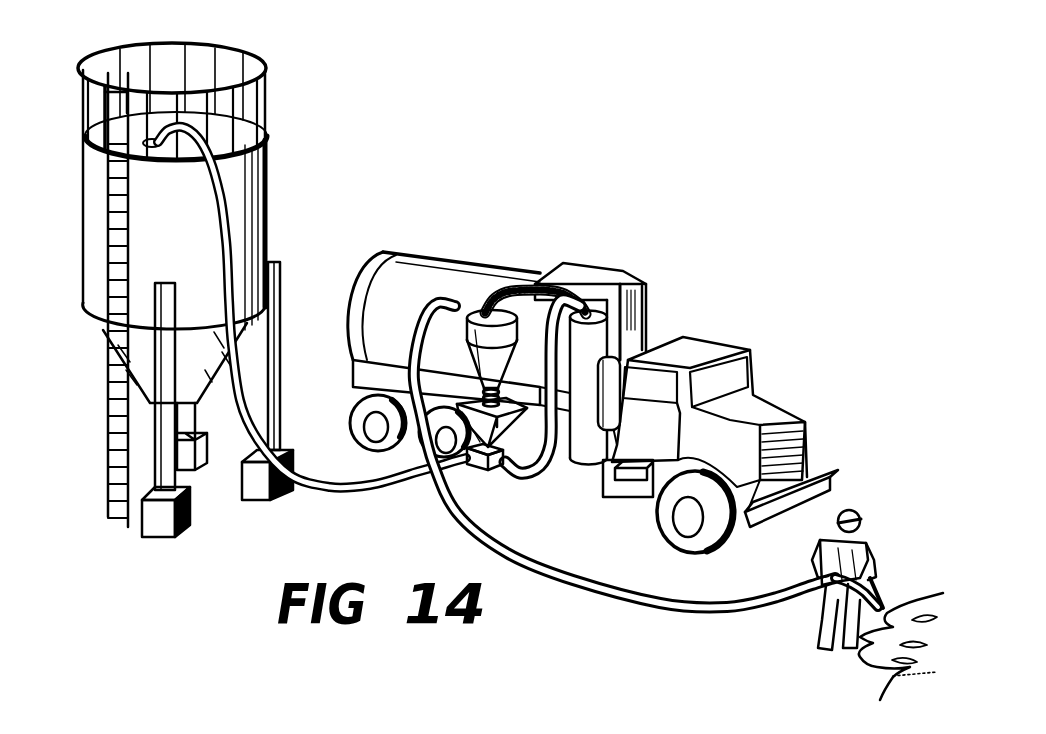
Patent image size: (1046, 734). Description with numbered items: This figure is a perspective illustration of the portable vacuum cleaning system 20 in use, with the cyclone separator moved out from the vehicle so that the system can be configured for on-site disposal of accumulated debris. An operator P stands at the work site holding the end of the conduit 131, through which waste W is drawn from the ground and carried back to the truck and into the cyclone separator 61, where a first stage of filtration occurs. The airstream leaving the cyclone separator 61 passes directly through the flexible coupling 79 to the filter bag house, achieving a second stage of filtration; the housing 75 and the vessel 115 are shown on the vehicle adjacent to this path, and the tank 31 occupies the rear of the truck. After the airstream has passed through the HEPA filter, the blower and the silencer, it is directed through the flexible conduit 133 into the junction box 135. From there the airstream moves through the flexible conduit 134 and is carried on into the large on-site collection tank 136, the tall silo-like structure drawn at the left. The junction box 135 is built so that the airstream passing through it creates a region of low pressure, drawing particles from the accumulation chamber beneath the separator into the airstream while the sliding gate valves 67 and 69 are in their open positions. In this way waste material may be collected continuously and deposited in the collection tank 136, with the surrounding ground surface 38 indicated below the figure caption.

The portable vacuum cleaning system 20 is at (477, 211).
The liquid tank 31 is at (415, 252).
The cyclone separator 61 is at (481, 352).
The sliding gate valve 67 is at (504, 382).
The sliding gate valve 69 is at (502, 450).
The blower housing 75 is at (583, 270).
The flexible coupling 79 is at (497, 282).
The pressure vessel 115 is at (590, 470).
The conduit 131 is at (680, 614).
The flexible conduit 133 is at (528, 480).
The flexible conduit 134 is at (356, 495).
The junction box 135 is at (475, 468).
The on-site collection tank 136 is at (253, 228).
The ground surface 38 is at (376, 708).
The operator P is at (862, 538).
The waste W is at (886, 690).